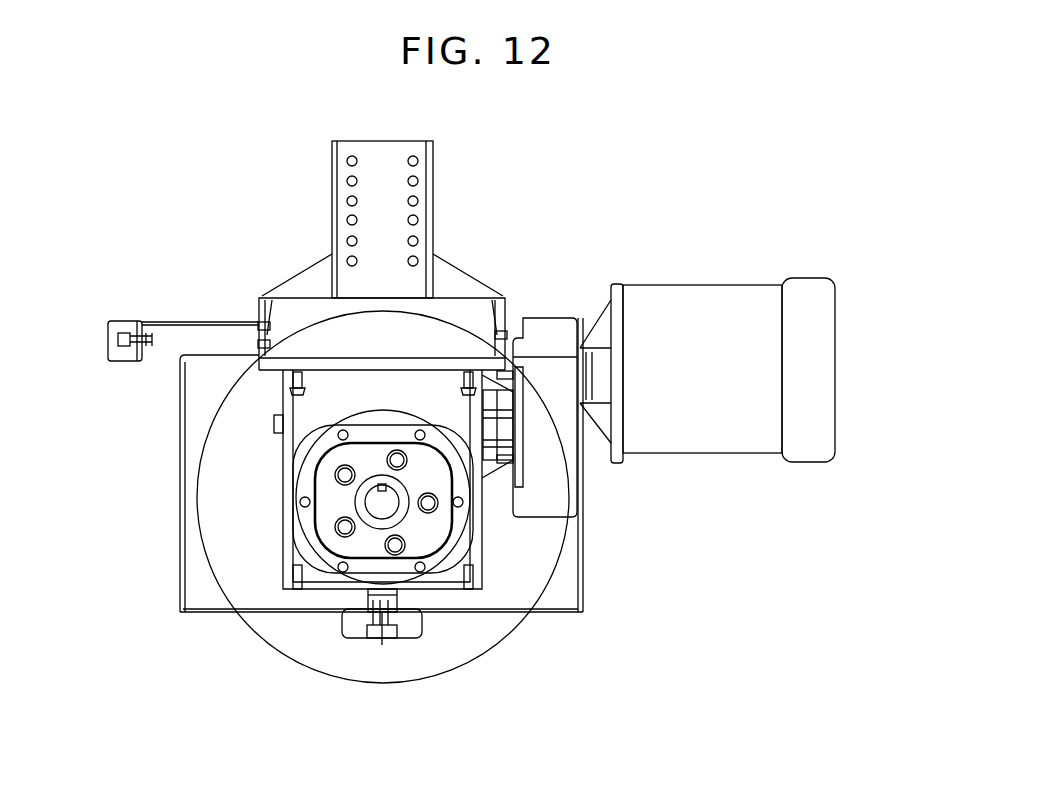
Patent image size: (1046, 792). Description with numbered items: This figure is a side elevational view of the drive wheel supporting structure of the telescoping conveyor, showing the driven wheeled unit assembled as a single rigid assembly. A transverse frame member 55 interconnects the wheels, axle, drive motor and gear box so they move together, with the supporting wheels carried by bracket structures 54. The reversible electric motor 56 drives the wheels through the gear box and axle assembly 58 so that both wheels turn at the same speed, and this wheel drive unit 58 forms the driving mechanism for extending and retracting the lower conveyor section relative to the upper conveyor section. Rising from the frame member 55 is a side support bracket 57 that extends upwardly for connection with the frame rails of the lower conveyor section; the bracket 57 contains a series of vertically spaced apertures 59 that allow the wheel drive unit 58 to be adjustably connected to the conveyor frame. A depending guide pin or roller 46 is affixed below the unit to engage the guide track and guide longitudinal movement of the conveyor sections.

The guide pin or roller 46 is at (413, 630).
The bracket structure 54 is at (571, 562).
The transverse frame member 55 is at (470, 302).
The reversible electric motor 56 is at (707, 298).
The side support bracket 57 is at (381, 152).
The gear box and axle assembly 58 is at (303, 526).
The apertures 59 is at (413, 181).